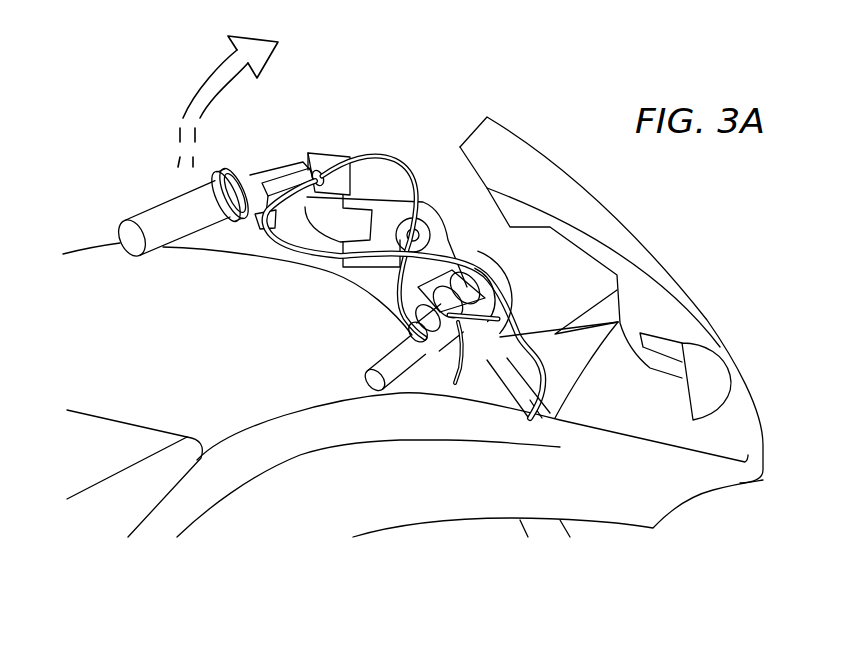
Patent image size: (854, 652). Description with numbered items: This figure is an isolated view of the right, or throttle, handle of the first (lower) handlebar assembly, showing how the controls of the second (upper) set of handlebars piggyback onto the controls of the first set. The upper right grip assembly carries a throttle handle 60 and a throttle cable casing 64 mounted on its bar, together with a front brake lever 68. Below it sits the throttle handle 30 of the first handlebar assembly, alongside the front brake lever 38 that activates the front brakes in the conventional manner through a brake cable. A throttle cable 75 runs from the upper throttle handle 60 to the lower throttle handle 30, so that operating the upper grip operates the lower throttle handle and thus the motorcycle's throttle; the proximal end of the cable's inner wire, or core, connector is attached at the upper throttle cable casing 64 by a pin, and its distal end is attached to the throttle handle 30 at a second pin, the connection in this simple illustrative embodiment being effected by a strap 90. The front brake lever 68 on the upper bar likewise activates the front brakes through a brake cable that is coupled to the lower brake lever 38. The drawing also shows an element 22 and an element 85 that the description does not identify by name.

The fairing / windscreen 22 is at (603, 203).
The throttle handle 30 is at (380, 362).
The front brake lever 38 is at (452, 380).
The throttle handle 60 is at (156, 247).
The throttle cable casing 64 is at (240, 174).
The front brake lever 68 is at (260, 223).
The throttle cable 75 is at (285, 256).
The clip 85 is at (473, 337).
The strap 90 is at (410, 333).